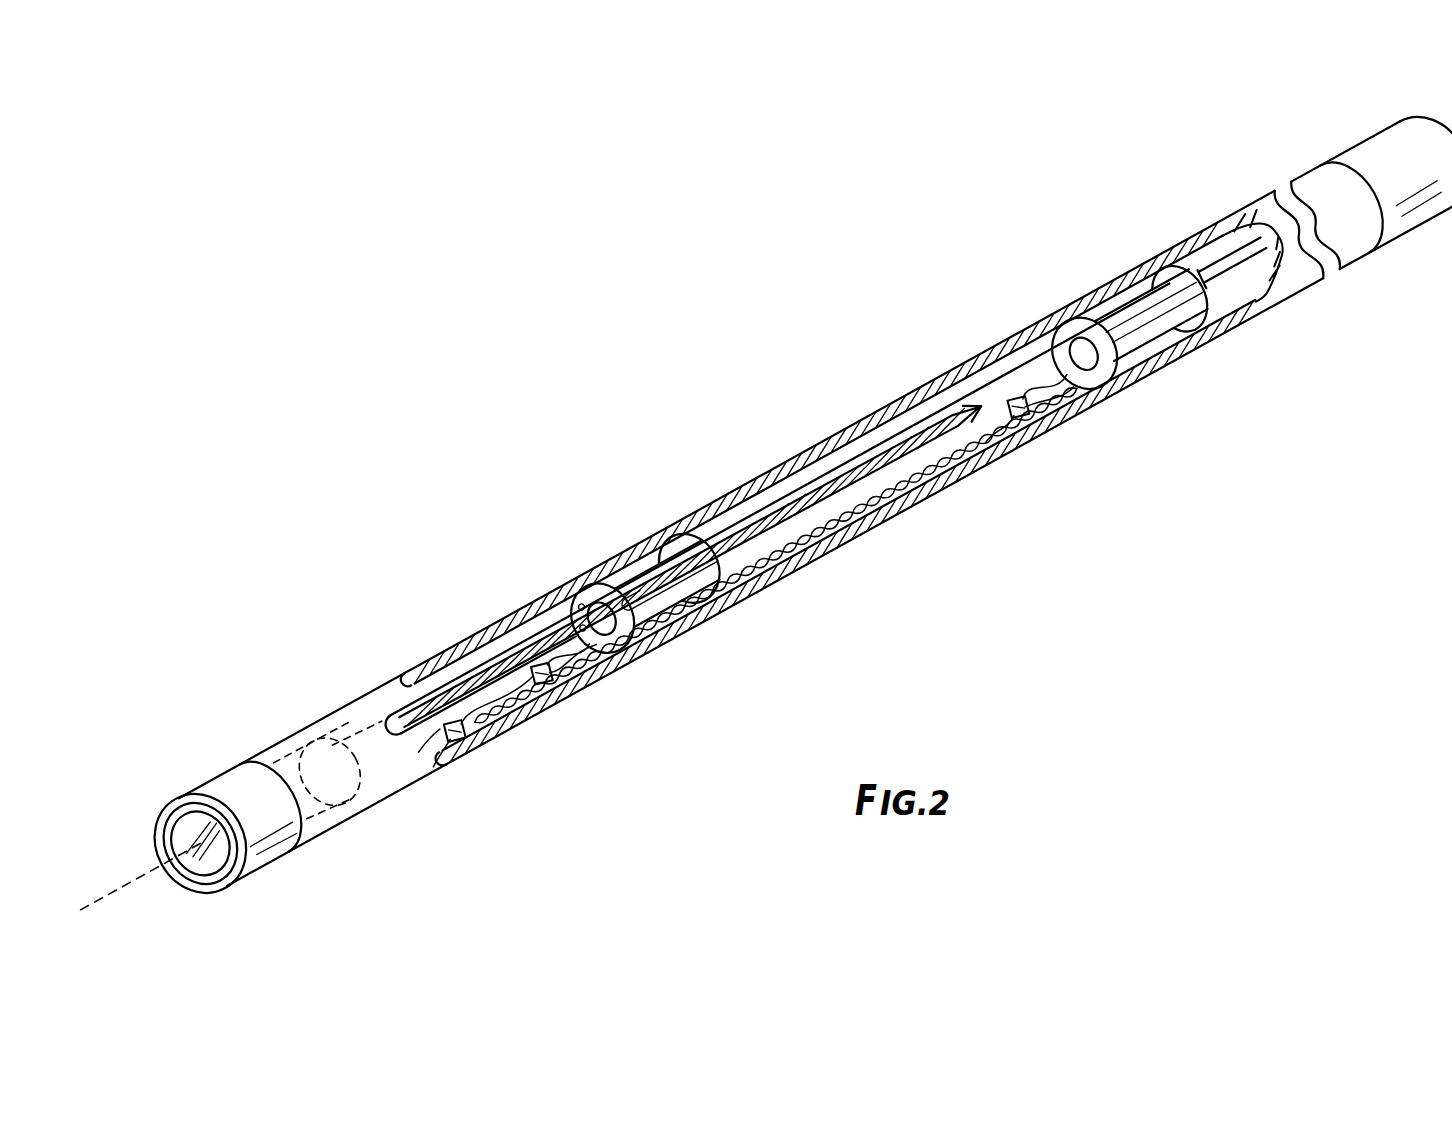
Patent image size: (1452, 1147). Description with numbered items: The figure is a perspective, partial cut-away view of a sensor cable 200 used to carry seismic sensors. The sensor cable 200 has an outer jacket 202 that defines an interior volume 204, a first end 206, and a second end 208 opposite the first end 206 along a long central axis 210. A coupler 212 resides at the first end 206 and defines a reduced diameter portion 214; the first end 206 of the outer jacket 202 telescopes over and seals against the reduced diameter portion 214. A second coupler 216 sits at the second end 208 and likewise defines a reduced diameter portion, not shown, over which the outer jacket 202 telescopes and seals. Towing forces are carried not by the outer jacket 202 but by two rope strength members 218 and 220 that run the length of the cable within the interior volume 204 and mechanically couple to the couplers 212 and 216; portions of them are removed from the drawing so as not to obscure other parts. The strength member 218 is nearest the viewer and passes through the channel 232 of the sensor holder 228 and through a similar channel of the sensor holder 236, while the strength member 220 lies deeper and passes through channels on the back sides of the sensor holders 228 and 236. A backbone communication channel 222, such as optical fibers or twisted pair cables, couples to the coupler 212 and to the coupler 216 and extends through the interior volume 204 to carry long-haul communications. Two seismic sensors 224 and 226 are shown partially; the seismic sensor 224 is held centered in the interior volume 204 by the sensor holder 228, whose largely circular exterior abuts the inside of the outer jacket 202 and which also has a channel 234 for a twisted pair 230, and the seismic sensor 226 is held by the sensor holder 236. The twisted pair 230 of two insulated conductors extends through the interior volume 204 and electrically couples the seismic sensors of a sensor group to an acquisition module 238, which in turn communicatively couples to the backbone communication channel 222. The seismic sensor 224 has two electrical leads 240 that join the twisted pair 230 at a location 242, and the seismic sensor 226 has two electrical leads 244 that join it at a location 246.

The sensor cable 200 is at (371, 351).
The outer jacket 202 is at (382, 685).
The interior volume 204 is at (494, 680).
The first end 206 is at (289, 711).
The second end 208 is at (1357, 267).
The long central axis 210 is at (125, 888).
The coupler 212 is at (207, 783).
The reduced diameter portion 214 is at (333, 817).
The second coupler 216 is at (1383, 150).
The strength member 218 is at (417, 740).
The strength member 220 is at (942, 420).
The backbone communication channel 222 is at (745, 495).
The seismic sensor 224 is at (593, 597).
The seismic sensor 226 is at (1077, 337).
The sensor holder 228 is at (642, 563).
The twisted pair 230 is at (970, 455).
The channel 232 is at (648, 633).
The channel 234 is at (633, 633).
The sensor holder 236 is at (1137, 292).
The acquisition module 238 is at (463, 723).
The electrical leads 240 is at (553, 622).
The location 242 is at (547, 690).
The electrical leads 244 is at (1043, 358).
The location 246 is at (1030, 414).